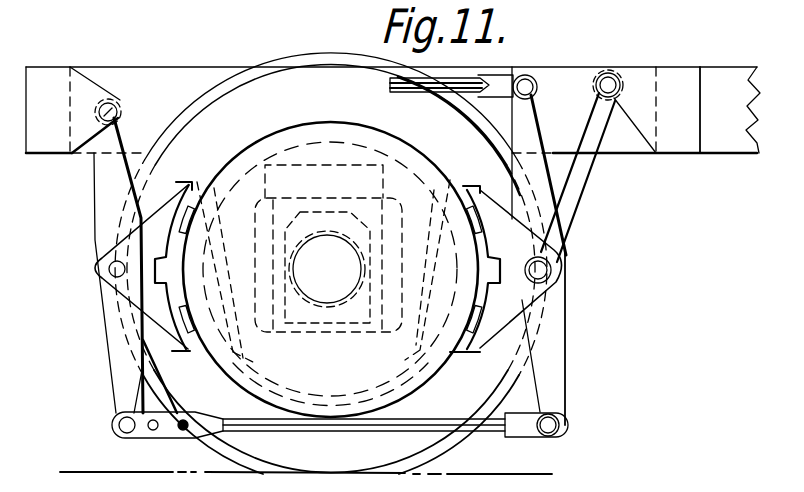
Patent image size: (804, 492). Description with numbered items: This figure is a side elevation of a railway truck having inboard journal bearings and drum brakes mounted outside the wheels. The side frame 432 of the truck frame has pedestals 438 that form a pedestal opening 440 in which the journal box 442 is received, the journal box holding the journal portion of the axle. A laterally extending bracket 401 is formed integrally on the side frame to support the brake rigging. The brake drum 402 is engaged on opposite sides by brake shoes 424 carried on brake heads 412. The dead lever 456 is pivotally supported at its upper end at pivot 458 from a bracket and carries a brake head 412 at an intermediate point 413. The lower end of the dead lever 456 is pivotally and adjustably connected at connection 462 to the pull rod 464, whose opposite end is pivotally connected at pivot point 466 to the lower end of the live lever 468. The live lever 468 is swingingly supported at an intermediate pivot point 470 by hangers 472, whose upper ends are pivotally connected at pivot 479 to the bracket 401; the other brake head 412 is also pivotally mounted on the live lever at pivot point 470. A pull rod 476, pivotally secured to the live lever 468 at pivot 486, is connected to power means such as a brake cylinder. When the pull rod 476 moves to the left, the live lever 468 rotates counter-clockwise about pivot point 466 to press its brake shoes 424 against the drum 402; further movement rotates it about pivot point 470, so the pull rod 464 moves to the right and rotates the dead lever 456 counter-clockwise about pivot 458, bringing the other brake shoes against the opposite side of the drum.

The bracket 401 is at (675, 137).
The brake drum 402 is at (275, 137).
The brake head 412 is at (130, 313).
The intermediate point 413 is at (108, 270).
The brake shoe 424 is at (215, 160).
The side frame 432 is at (757, 128).
The pedestal 438 is at (400, 353).
The pedestal opening 440 is at (362, 183).
The journal box 442 is at (287, 213).
The dead lever 456 is at (94, 203).
The pivot 458 is at (118, 105).
The pivotal and adjustable connection 462 is at (112, 425).
The pull rod 464 is at (278, 425).
The pivot point 466 is at (566, 424).
The live lever 468 is at (555, 355).
The pivot point 470 is at (552, 270).
The hanger 472 is at (568, 193).
The pull rod 476 is at (390, 92).
The pivot 479 is at (616, 76).
The pivot 486 is at (533, 78).